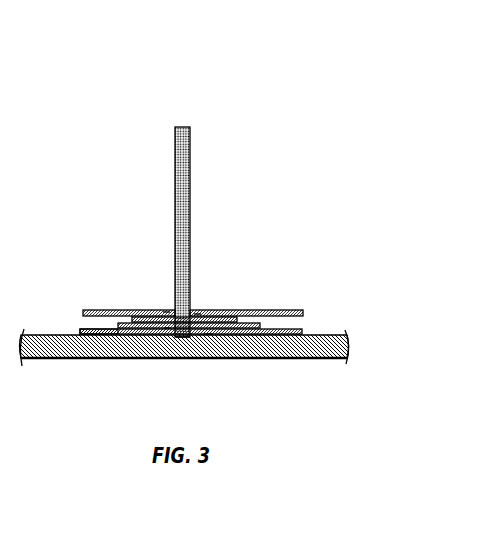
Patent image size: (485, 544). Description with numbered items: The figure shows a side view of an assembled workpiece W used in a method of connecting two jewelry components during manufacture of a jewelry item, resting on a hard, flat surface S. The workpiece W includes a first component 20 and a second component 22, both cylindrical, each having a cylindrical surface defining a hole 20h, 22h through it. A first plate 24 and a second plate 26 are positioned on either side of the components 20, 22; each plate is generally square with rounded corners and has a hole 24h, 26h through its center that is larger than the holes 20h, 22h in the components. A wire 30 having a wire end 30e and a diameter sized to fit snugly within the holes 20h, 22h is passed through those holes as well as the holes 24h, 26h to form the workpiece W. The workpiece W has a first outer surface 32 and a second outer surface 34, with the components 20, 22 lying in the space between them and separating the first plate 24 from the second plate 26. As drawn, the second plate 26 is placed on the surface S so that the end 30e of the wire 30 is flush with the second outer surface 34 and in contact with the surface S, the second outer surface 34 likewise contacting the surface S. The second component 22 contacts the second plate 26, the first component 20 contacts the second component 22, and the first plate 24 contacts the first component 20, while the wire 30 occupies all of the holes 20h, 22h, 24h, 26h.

The hard, flat surface S is at (343, 336).
The workpiece W is at (93, 234).
The wire 30 is at (175, 156).
The wire end 30e is at (186, 338).
The first component 20 is at (129, 319).
The hole 20h is at (197, 314).
The second component 22 is at (117, 322).
The hole 22h is at (167, 330).
The first plate 24 is at (85, 312).
The hole 24h is at (166, 312).
The second plate 26 is at (302, 331).
The hole 26h is at (208, 334).
The first outer surface 32 is at (272, 311).
The second outer surface 34 is at (80, 338).